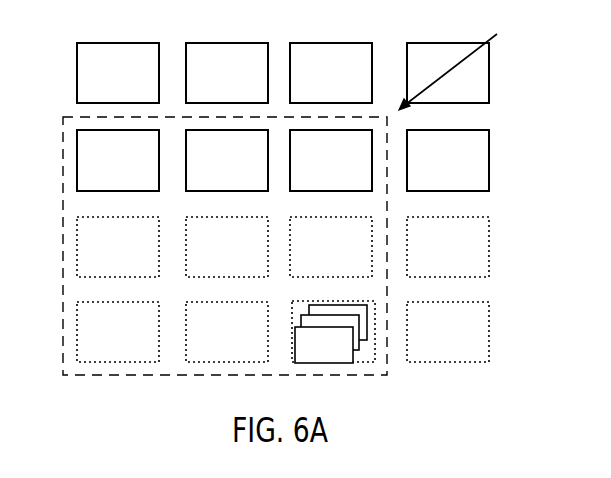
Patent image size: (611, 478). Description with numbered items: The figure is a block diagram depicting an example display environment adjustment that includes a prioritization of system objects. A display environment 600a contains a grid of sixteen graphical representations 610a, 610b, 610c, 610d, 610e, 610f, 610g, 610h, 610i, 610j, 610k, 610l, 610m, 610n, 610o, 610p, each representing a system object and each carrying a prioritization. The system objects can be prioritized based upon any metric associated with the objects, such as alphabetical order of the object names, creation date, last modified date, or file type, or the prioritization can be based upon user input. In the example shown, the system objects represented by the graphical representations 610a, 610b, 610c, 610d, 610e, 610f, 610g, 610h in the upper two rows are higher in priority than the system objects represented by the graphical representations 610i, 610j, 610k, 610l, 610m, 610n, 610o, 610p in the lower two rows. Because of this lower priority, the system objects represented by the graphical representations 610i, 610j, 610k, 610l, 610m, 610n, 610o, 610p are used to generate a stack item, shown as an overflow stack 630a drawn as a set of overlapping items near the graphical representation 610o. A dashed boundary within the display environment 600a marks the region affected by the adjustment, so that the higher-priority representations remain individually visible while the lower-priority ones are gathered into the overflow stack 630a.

The display region / selected subset of tiles 600a is at (100, 377).
The graphical representation 610a is at (118, 73).
The graphical representation 610b is at (227, 73).
The graphical representation 610c is at (331, 73).
The graphical representation 610d is at (448, 73).
The graphical representation 610e is at (118, 160).
The graphical representation 610f is at (227, 160).
The graphical representation 610g is at (331, 160).
The graphical representation 610h is at (448, 160).
The graphical representation 610i is at (118, 247).
The graphical representation 610j is at (227, 247).
The graphical representation 610k is at (331, 247).
The graphical representation 610l is at (448, 247).
The graphical representation 610m is at (118, 332).
The graphical representation 610n is at (227, 332).
The graphical representation 610o is at (377, 314).
The graphical representation 610p is at (448, 332).
The overflow stack 630a is at (325, 343).